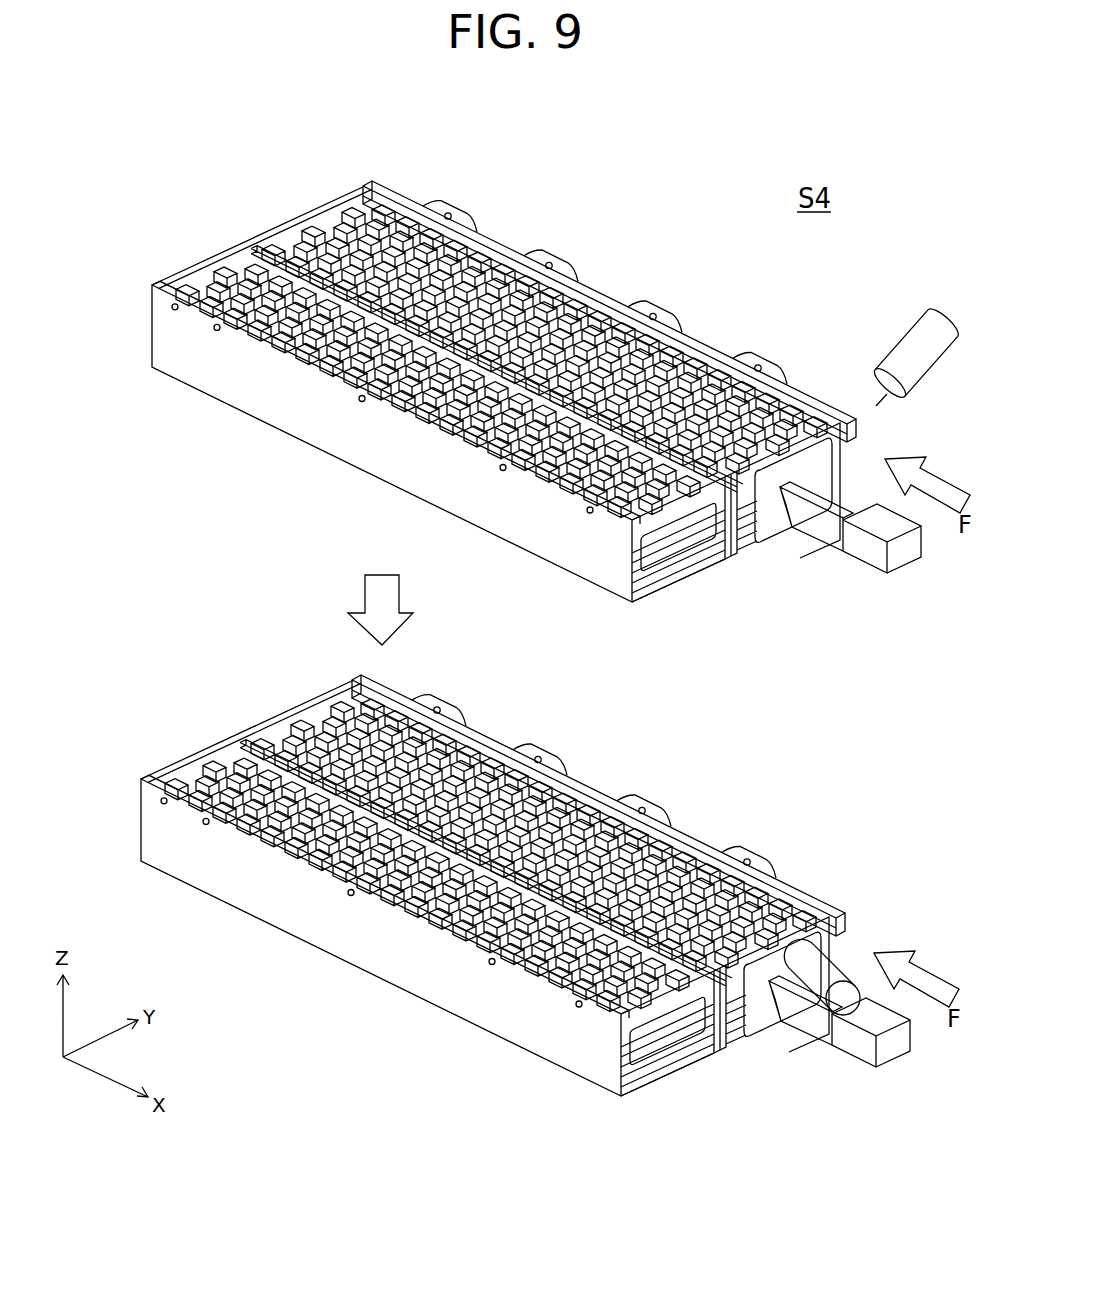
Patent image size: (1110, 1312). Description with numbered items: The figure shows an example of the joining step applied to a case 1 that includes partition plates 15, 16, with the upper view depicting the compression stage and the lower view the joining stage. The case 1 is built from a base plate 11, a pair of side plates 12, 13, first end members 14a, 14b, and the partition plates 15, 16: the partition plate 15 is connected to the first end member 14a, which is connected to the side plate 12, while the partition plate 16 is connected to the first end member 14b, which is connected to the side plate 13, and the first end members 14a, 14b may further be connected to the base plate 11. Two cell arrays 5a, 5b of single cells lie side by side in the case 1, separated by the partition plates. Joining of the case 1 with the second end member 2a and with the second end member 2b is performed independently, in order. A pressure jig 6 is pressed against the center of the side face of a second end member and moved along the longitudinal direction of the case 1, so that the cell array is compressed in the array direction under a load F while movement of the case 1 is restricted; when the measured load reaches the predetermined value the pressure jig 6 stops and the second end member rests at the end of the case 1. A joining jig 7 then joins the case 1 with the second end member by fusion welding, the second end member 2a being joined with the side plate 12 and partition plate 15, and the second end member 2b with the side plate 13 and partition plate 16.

The case 1 is at (549, 645).
The second end member 2a is at (679, 822).
The second end member 2b is at (757, 804).
The cell array 5a is at (454, 630).
The cell array 5b is at (539, 586).
The pressure jig 6 is at (855, 823).
The joining jig 7 is at (893, 346).
The base plate 11 is at (673, 854).
The side plate 12 is at (386, 699).
The side plate 13 is at (599, 531).
The first end member 14a is at (390, 589).
The first end member 14b is at (256, 447).
The partition plate 15 is at (608, 547).
The partition plate 16 is at (604, 628).